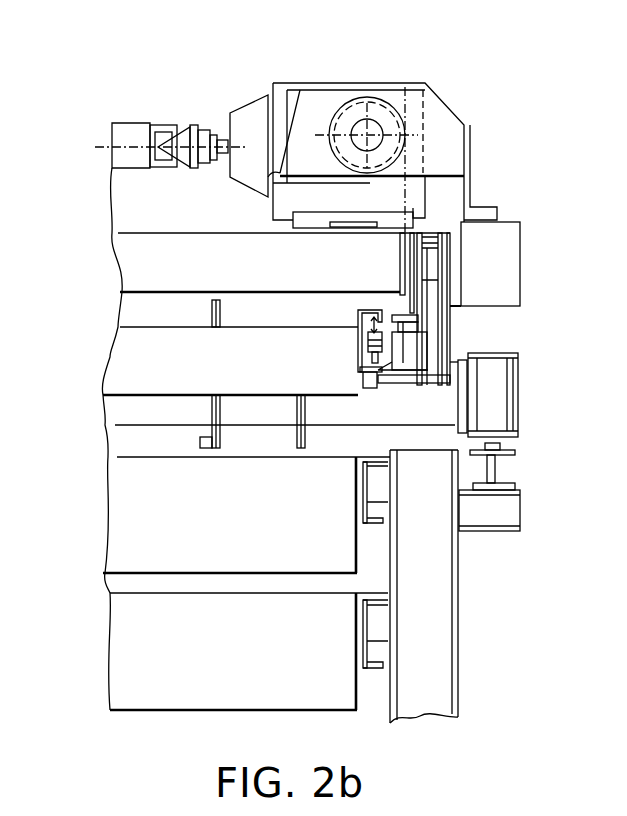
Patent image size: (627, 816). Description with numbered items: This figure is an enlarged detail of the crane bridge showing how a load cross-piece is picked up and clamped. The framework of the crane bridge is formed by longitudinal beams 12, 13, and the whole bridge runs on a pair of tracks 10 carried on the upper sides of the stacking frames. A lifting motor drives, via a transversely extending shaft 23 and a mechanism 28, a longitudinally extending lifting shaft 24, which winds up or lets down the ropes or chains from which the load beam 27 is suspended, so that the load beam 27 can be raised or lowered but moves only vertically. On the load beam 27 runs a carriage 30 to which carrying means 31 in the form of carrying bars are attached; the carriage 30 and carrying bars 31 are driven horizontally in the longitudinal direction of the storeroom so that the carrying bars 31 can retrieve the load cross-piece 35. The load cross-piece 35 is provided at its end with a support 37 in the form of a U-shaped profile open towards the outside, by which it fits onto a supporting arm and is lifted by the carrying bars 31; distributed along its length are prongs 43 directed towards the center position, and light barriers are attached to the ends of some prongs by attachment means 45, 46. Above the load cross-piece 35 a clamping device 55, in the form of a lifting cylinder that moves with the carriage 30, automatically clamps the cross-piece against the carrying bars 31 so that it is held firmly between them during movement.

The track 10 is at (500, 470).
The longitudinal beam 12 is at (510, 277).
The longitudinal beam 13 is at (493, 402).
The shaft 23 is at (137, 135).
The lifting shaft 24 is at (372, 130).
The load beam 27 is at (450, 320).
The mechanism 28 is at (415, 82).
The carriage 30 is at (433, 350).
The carrying means 31 is at (375, 388).
The load cross-piece 35 is at (118, 358).
The support 37 is at (372, 308).
The prong 43 is at (301, 452).
The attachment means 45 is at (204, 450).
The attachment means 46 is at (220, 308).
The clamping device 55 is at (368, 338).